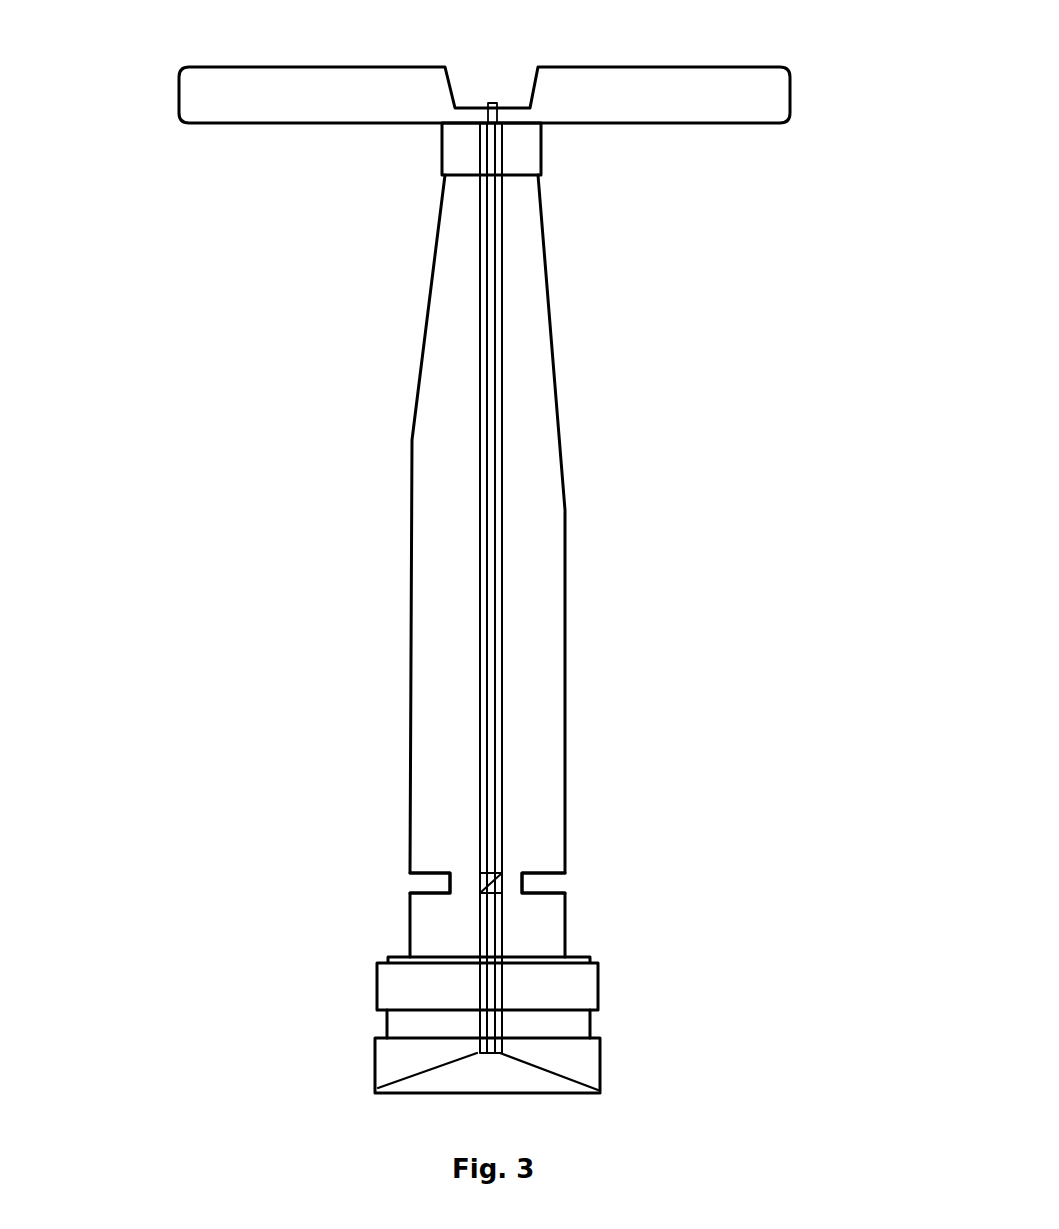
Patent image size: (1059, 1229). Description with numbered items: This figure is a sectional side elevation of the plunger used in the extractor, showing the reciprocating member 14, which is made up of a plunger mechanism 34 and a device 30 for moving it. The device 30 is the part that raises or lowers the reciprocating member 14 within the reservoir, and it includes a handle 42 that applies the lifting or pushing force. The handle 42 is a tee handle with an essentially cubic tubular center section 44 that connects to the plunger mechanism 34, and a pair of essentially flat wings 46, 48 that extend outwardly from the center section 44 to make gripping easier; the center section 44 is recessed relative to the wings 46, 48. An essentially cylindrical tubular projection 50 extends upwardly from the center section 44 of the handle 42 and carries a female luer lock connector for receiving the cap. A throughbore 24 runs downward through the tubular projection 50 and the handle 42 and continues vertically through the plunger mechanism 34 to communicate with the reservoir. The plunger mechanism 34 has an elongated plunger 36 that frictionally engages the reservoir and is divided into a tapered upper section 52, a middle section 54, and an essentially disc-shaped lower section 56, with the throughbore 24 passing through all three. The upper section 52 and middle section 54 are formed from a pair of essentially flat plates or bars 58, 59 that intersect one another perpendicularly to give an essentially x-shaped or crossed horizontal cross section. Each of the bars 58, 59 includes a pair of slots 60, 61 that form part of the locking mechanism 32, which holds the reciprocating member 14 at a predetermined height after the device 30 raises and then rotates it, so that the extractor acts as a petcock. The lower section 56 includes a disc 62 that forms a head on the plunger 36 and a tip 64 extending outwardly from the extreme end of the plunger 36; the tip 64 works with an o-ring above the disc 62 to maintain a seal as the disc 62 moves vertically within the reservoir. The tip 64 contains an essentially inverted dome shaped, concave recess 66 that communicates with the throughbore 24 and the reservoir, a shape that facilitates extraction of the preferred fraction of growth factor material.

The reciprocating member 14 is at (145, 175).
The throughbore 24 is at (481, 240).
The device 30 is at (315, 153).
The locking mechanism 32 is at (522, 878).
The plunger mechanism 34 is at (547, 220).
The elongated plunger 36 is at (393, 985).
The handle 42 is at (316, 67).
The center section 44 is at (530, 140).
The wing 46 is at (222, 88).
The wing 48 is at (650, 95).
The tubular projection 50 is at (490, 103).
The tapered upper section 52 is at (550, 290).
The middle section 54 is at (566, 705).
The lower section 56 is at (592, 1022).
The bar 58 is at (437, 450).
The bar 59 is at (503, 403).
The slot 60 is at (422, 875).
The slot 61 is at (497, 882).
The disc 62 is at (420, 1037).
The tip 64 is at (598, 1093).
The concave recess 66 is at (420, 1073).